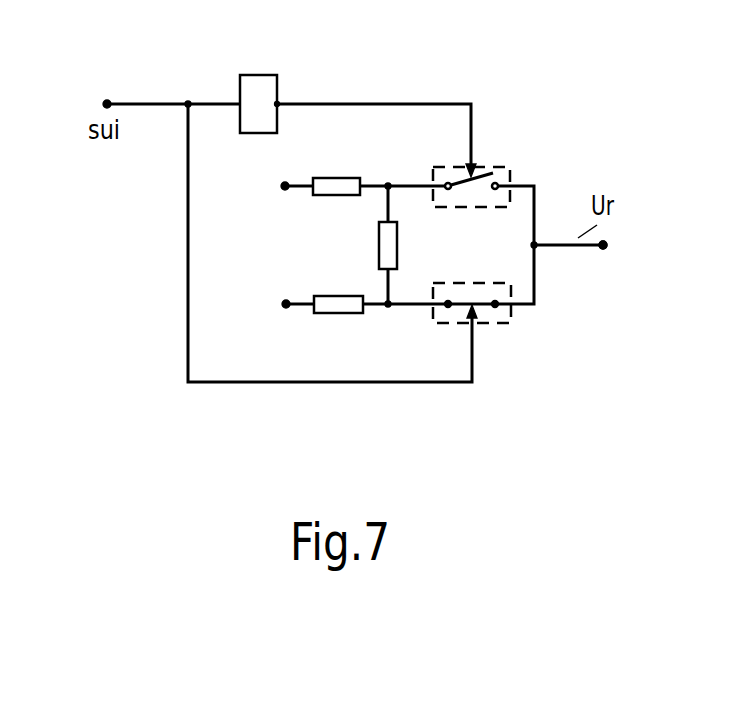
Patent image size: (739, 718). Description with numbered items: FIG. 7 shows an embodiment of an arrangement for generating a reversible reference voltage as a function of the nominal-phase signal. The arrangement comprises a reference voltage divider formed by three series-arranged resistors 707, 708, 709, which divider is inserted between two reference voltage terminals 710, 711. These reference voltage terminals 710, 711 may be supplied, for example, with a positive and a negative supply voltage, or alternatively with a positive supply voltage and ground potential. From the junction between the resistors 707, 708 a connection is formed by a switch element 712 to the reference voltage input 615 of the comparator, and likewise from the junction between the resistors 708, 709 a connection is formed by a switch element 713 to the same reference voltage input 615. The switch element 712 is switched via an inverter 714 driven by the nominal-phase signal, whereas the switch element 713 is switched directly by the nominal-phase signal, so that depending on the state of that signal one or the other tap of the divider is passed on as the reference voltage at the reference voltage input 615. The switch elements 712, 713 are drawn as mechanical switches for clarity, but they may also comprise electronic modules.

The inverter 714 is at (262, 75).
The resistor 707 is at (336, 177).
The resistor 708 is at (377, 234).
The resistor 709 is at (340, 313).
The reference voltage terminal 710 is at (282, 186).
The reference voltage terminal 711 is at (282, 306).
The switch element 712 is at (512, 176).
The switch element 713 is at (488, 325).
The reference voltage input 615 is at (606, 248).